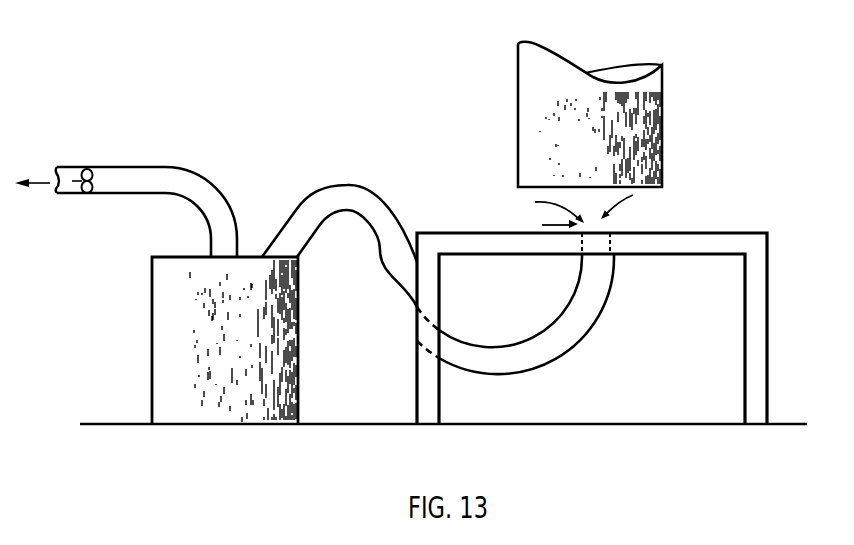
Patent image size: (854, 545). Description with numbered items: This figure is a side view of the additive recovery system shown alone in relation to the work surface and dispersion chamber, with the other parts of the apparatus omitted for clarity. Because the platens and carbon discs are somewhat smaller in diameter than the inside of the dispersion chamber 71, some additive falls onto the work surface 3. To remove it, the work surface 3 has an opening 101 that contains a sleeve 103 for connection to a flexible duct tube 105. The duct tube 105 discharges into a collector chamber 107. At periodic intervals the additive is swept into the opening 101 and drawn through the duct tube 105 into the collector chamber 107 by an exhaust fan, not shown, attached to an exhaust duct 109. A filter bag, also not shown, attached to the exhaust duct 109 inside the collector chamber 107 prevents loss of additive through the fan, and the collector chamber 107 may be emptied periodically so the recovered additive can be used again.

The work surface 3 is at (735, 233).
The dispersion chamber 71 is at (518, 97).
The opening 101 is at (598, 245).
The sleeve 103 is at (580, 257).
The flexible duct tube 105 is at (347, 184).
The collector chamber 107 is at (152, 318).
The exhaust duct 109 is at (115, 166).